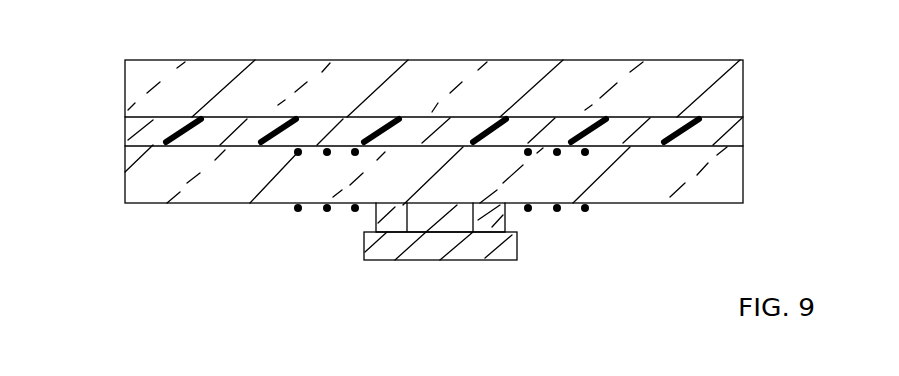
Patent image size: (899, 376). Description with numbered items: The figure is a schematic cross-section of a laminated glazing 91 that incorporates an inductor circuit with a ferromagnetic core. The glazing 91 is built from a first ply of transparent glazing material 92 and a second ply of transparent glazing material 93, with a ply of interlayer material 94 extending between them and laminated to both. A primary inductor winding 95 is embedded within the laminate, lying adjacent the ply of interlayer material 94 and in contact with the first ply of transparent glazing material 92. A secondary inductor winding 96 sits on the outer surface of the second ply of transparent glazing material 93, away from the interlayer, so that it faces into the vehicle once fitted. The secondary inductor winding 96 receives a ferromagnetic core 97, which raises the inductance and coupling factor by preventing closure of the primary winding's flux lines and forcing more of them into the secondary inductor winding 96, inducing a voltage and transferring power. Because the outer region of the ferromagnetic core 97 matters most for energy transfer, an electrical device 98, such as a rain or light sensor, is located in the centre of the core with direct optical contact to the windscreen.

The glazing 91 is at (764, 91).
The first ply of transparent glazing material 92 is at (718, 60).
The second ply of transparent glazing material 93 is at (723, 197).
The ply of interlayer material 94 is at (127, 137).
The primary inductor winding 95 is at (296, 153).
The secondary inductor winding 96 is at (557, 209).
The ferromagnetic core 97 is at (383, 227).
The electrical device 98 is at (437, 259).